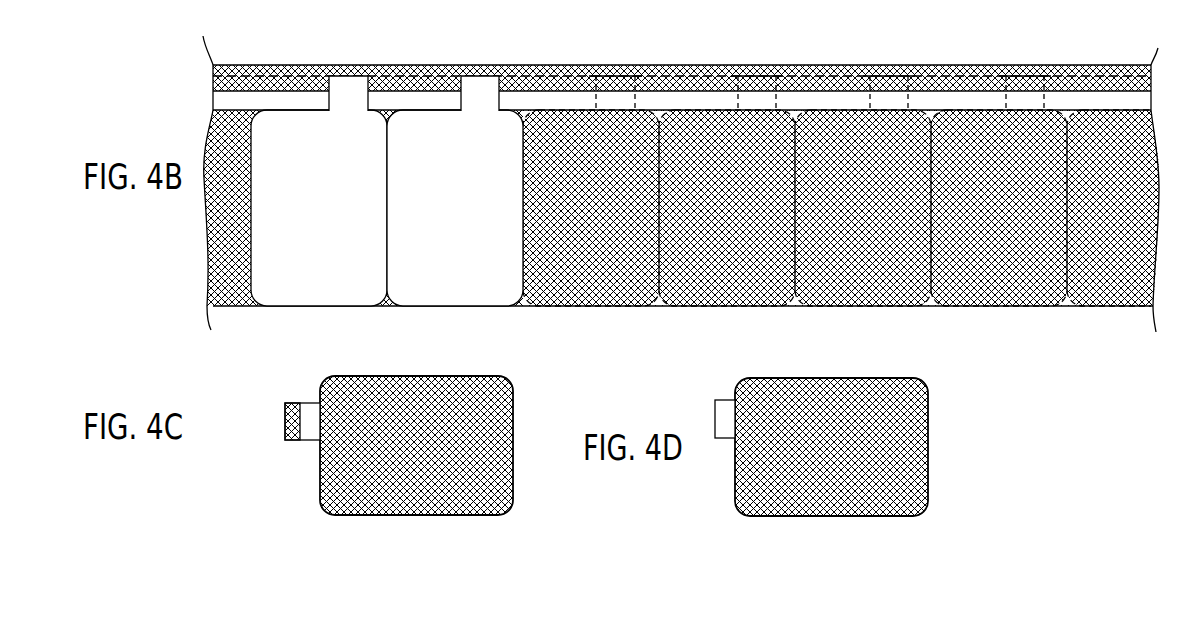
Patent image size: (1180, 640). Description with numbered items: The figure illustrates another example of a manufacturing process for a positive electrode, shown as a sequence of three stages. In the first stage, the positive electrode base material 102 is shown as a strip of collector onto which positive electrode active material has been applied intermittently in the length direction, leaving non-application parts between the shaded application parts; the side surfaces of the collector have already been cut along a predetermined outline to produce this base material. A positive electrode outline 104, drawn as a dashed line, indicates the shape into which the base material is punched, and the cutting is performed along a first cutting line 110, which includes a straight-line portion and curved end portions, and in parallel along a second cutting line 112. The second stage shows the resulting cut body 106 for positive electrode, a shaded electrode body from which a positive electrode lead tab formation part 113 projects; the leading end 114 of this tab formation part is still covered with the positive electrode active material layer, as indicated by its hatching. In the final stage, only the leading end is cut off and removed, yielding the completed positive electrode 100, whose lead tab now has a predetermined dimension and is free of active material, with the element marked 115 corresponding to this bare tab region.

In FIG. 4D, the positive electrode 100 is at (835, 438).
In FIG. 4B, the positive electrode base material 102 is at (293, 54).
In FIG. 4B, the positive electrode outline 104 is at (682, 36).
In FIG. 4C, the cut body for positive electrode 106 is at (410, 366).
In FIG. 4B, the first cutting line 110 is at (1063, 217).
In FIG. 4B, the second cutting line 112 is at (696, 104).
In FIG. 4B, the positive electrode lead tab formation part 113 is at (452, 69).
In FIG. 4C, the positive electrode lead tab formation part 113 is at (273, 391).
In FIG. 4C, the leading end 114 is at (277, 416).
In FIG. 4D, the tab portion 115 is at (707, 393).